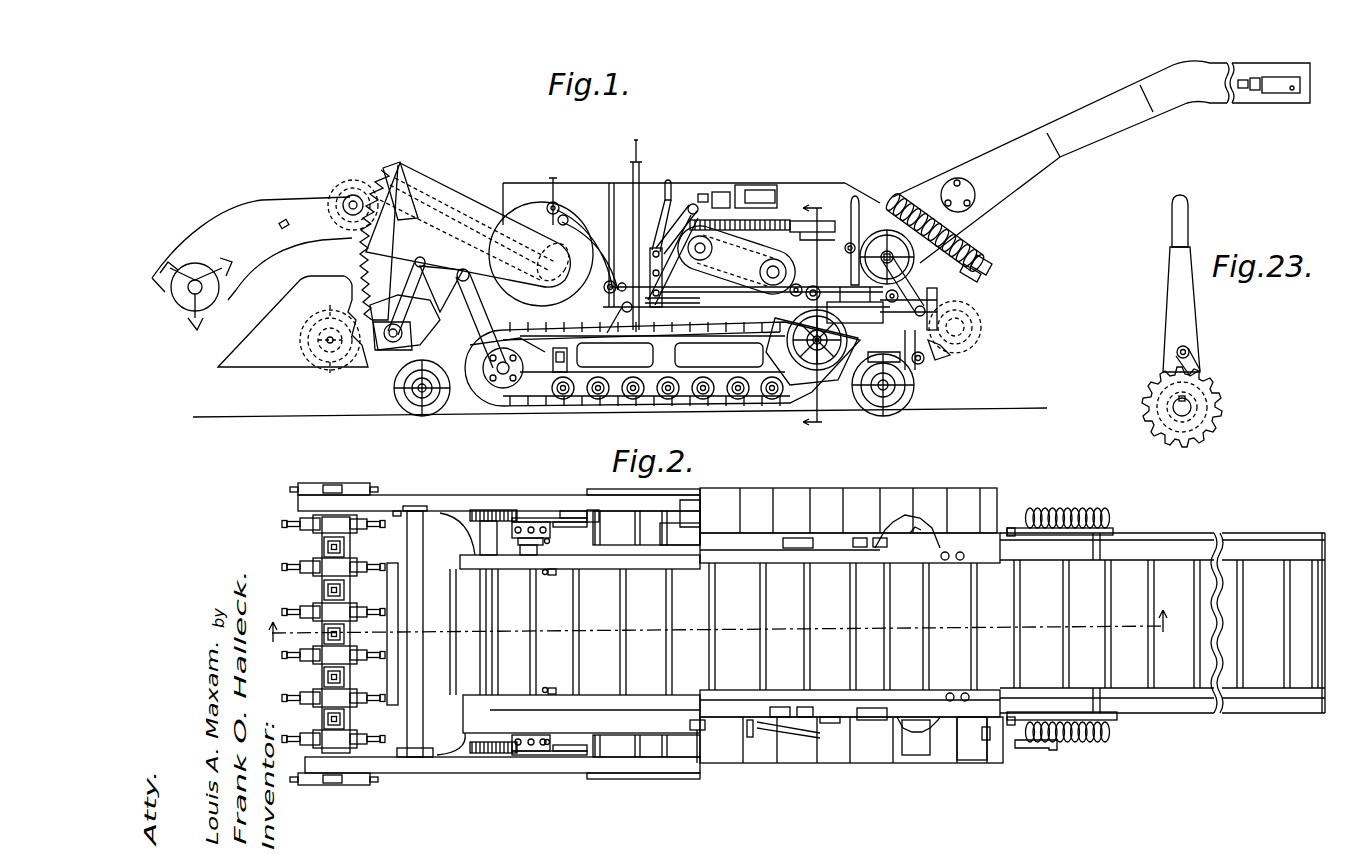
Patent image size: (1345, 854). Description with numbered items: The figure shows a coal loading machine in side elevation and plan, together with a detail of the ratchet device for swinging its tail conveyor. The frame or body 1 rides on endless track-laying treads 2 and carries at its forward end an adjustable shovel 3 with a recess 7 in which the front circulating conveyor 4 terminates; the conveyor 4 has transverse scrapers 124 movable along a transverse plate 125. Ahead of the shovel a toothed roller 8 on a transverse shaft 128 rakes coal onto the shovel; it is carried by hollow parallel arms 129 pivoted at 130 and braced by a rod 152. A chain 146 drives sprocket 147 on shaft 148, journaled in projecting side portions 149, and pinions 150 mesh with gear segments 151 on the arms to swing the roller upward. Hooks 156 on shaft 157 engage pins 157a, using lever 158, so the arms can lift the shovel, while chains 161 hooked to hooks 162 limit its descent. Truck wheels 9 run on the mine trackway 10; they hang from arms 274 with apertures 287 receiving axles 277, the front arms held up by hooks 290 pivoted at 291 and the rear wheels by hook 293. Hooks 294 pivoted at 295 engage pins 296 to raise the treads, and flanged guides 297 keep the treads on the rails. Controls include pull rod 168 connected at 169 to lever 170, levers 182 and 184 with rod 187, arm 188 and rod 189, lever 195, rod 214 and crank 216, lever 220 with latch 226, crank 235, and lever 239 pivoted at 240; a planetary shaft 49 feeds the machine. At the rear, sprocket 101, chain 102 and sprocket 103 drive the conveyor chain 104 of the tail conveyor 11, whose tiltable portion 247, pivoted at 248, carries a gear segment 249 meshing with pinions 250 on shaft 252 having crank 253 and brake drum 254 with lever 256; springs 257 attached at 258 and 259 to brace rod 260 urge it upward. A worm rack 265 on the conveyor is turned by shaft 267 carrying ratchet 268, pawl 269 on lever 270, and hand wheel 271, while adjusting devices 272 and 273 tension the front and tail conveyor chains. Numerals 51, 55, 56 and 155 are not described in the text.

In FIG. 1, the frame or body 1 is at (693, 203).
In FIG. 2, the frame or body 1 is at (552, 552).
In FIG. 1, the endless track-laying treads 2 is at (590, 406).
In FIG. 2, the endless track-laying treads 2 is at (930, 490).
In FIG. 1, the shovel or nosepiece 3 is at (272, 358).
In FIG. 2, the shovel or nosepiece 3 is at (438, 522).
In FIG. 2, the circulating conveyor 4 is at (597, 680).
In FIG. 2, the cut-away portion or recess 7 is at (396, 511).
In FIG. 1, the toothed roller or drum 8 is at (172, 295).
In FIG. 2, the toothed roller or drum 8 is at (320, 546).
In FIG. 1, the wheels 9 is at (408, 410).
In FIG. 2, the wheels 9 is at (575, 514).
In FIG. 1, the mine trackway 10 is at (1008, 400).
In FIG. 1, the tail conveyor 11 is at (1081, 109).
In FIG. 2, the tail conveyor 11 is at (1255, 536).
In FIG. 1, the planetary shaft 49 is at (824, 348).
In FIG. 1, the drive sprocket 51 is at (792, 366).
In FIG. 1, the track rollers 55 is at (752, 372).
In FIG. 1, the bracket 56 is at (558, 374).
In FIG. 1, the sprocket 101 is at (784, 268).
In FIG. 1, the endless chain connection 102 is at (776, 260).
In FIG. 1, the driving sprocket 103 is at (704, 238).
In FIG. 2, the conveyor chain 104 is at (1148, 562).
In FIG. 2, the transverse scrapers 124 is at (667, 660).
In FIG. 2, the transverse plate 125 is at (733, 572).
In FIG. 2, the transverse supporting shaft 128 is at (330, 520).
In FIG. 1, the hollow parallel arms 129 is at (230, 223).
In FIG. 2, the hollow parallel arms 129 is at (415, 495).
In FIG. 1, the pivot 130 is at (556, 250).
In FIG. 1, the endless chain connection 146 is at (447, 222).
In FIG. 1, the sprocket 147 is at (362, 184).
In FIG. 1, the horizontal transversely extending shaft 148 is at (372, 200).
In FIG. 2, the horizontal transversely extending shaft 148 is at (490, 625).
In FIG. 1, the forwardly projecting side portions 149 is at (430, 180).
In FIG. 2, the forwardly projecting side portions 149 is at (477, 558).
In FIG. 1, the spur pinions 150 is at (343, 201).
In FIG. 2, the spur pinions 150 is at (490, 510).
In FIG. 1, the arcuate toothed members or gear segments 151 is at (408, 180).
In FIG. 2, the arcuate toothed members or gear segments 151 is at (530, 516).
In FIG. 2, the transversely extending bracing rod 152 is at (418, 740).
In FIG. 1, the bracket 155 is at (554, 200).
In FIG. 2, the bracket 155 is at (695, 731).
In FIG. 1, the hooks 156 is at (417, 322).
In FIG. 1, the horizontal transversely extending shaft 157 is at (388, 350).
In FIG. 2, the laterally projecting pins or lugs 157a is at (548, 516).
In FIG. 1, the operating lever 158 is at (418, 278).
In FIG. 2, the loose-link chains 161 is at (556, 572).
In FIG. 2, the hooks 162 is at (545, 583).
In FIG. 1, the reciprocable actuating or pull rod 168 is at (622, 307).
In FIG. 1, the pivotal connection 169 is at (622, 310).
In FIG. 1, the pivoted operating lever 170 is at (667, 185).
In FIG. 2, the pivoted operating lever 170 is at (810, 738).
In FIG. 1, the lever 182 is at (662, 270).
In FIG. 1, the lever 184 is at (670, 300).
In FIG. 1, the actuating rod 187 is at (719, 354).
In FIG. 1, the arm 188 is at (798, 283).
In FIG. 1, the horizontal transversely extending actuating rod 189 is at (815, 290).
In FIG. 1, the lever 195 is at (716, 190).
In FIG. 2, the lever 195 is at (835, 723).
In FIG. 1, the actuating rod 214 is at (855, 305).
In FIG. 1, the crank 216 is at (912, 290).
In FIG. 1, the operating lever 220 is at (634, 190).
In FIG. 2, the operating lever 220 is at (778, 707).
In FIG. 1, the pivoted latch member 226 is at (636, 160).
In FIG. 1, the crank 235 is at (926, 360).
In FIG. 1, the lever 239 is at (609, 200).
In FIG. 2, the lever 239 is at (750, 738).
In FIG. 1, the pivot 240 is at (604, 284).
In FIG. 1, the tiltable portion 247 is at (1131, 125).
In FIG. 2, the tiltable portion 247 is at (1257, 713).
In FIG. 1, the pivot 248 is at (966, 188).
In FIG. 1, the arcuately arranged toothed or gear segment 249 is at (946, 188).
In FIG. 2, the arcuately arranged toothed or gear segment 249 is at (1035, 528).
In FIG. 2, the pinions 250 is at (1010, 529).
In FIG. 1, the horizontal transversely extending shaft 252 is at (845, 249).
In FIG. 1, the operating crank 253 is at (937, 300).
In FIG. 2, the operating crank 253 is at (1052, 751).
In FIG. 1, the brake drum 254 is at (862, 220).
In FIG. 2, the brake drum 254 is at (988, 741).
In FIG. 1, the operating lever 256 is at (856, 200).
In FIG. 2, the operating lever 256 is at (990, 725).
In FIG. 1, the coiled springs 257 is at (978, 248).
In FIG. 2, the coiled springs 257 is at (1068, 514).
In FIG. 1, the spring attachment 258 is at (890, 200).
In FIG. 1, the spring attachment 259 is at (975, 276).
In FIG. 1, the transverse brace rod 260 is at (992, 262).
In FIG. 1, the worm tooth rack or gear segment 265 is at (772, 231).
In FIG. 2, the worm tooth rack or gear segment 265 is at (927, 540).
In FIG. 23, the horizontal transversely extending shaft 267 is at (1192, 403).
In FIG. 1, the ratchet 268 is at (682, 220).
In FIG. 23, the ratchet 268 is at (1152, 420).
In FIG. 23, the reversible pawl or dog 269 is at (1192, 358).
In FIG. 1, the lever 270 is at (670, 185).
In FIG. 2, the lever 270 is at (810, 707).
In FIG. 23, the lever 270 is at (1172, 305).
In FIG. 2, the hand wheel 271 is at (797, 543).
In FIG. 1, the adjusting device 272 is at (742, 212).
In FIG. 2, the adjusting device 272 is at (873, 540).
In FIG. 1, the adjusting device 273 is at (1283, 78).
In FIG. 1, the arms 274 is at (916, 368).
In FIG. 2, the transverse axles 277 is at (557, 540).
In FIG. 2, the apertures 287 is at (517, 521).
In FIG. 1, the hooks 290 is at (330, 322).
In FIG. 1, the pivot 291 is at (336, 300).
In FIG. 1, the hook 293 is at (975, 336).
In FIG. 1, the hooks 294 is at (480, 316).
In FIG. 2, the hooks 294 is at (632, 490).
In FIG. 1, the pivot 295 is at (500, 380).
In FIG. 1, the lateral pins 296 is at (465, 268).
In FIG. 1, the flanged guide members 297 is at (878, 414).